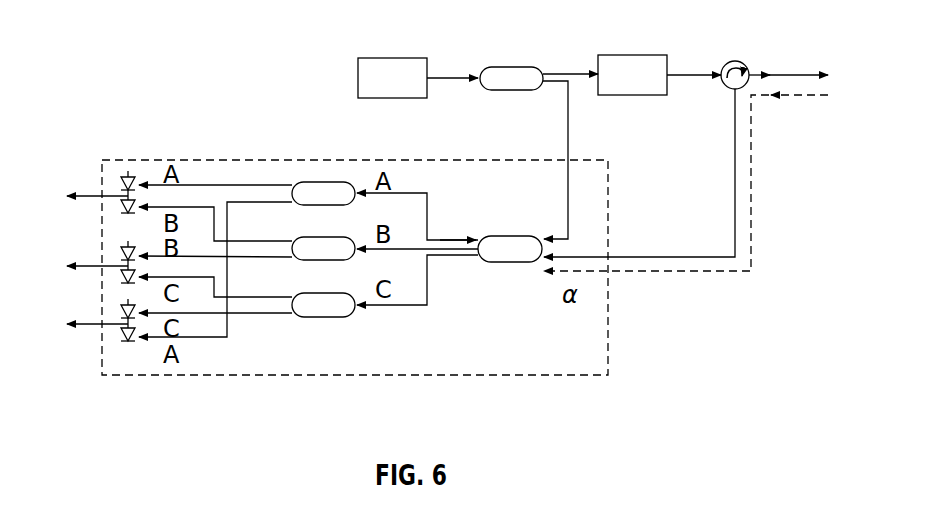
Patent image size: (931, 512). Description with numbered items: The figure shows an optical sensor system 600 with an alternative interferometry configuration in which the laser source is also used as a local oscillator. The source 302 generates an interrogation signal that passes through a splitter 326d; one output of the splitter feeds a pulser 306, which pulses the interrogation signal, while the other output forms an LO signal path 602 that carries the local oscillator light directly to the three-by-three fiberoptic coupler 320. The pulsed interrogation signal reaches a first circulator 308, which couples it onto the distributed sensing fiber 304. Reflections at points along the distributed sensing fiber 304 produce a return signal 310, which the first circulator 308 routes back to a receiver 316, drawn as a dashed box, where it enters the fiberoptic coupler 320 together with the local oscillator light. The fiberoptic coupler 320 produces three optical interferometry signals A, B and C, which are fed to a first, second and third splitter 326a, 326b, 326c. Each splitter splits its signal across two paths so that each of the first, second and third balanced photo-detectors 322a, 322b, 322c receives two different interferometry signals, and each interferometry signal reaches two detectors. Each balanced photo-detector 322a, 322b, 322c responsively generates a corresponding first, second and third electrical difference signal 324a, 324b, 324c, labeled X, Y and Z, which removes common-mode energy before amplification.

The optical sensor system 600 is at (127, 40).
The source 302 is at (391, 57).
The splitter 326d is at (512, 66).
The pulser 306 is at (633, 54).
The distributed sensing fiber 304 is at (687, 73).
The first circulator 308 is at (738, 61).
The return signal 310 is at (645, 256).
The LO signal path 602 is at (570, 142).
The receiver 316 is at (250, 159).
The 3×3 fiberoptic coupler 320 is at (505, 263).
The first splitter 326a is at (320, 181).
The second splitter 326b is at (325, 236).
The third splitter 326c is at (322, 318).
The first balanced photo-detector 322a is at (125, 175).
The second balanced photo-detector 322b is at (125, 247).
The third balanced photo-detector 322c is at (125, 343).
The first electrical difference signal 324a is at (86, 195).
The second electrical difference signal 324b is at (95, 266).
The third electrical difference signal 324c is at (85, 325).